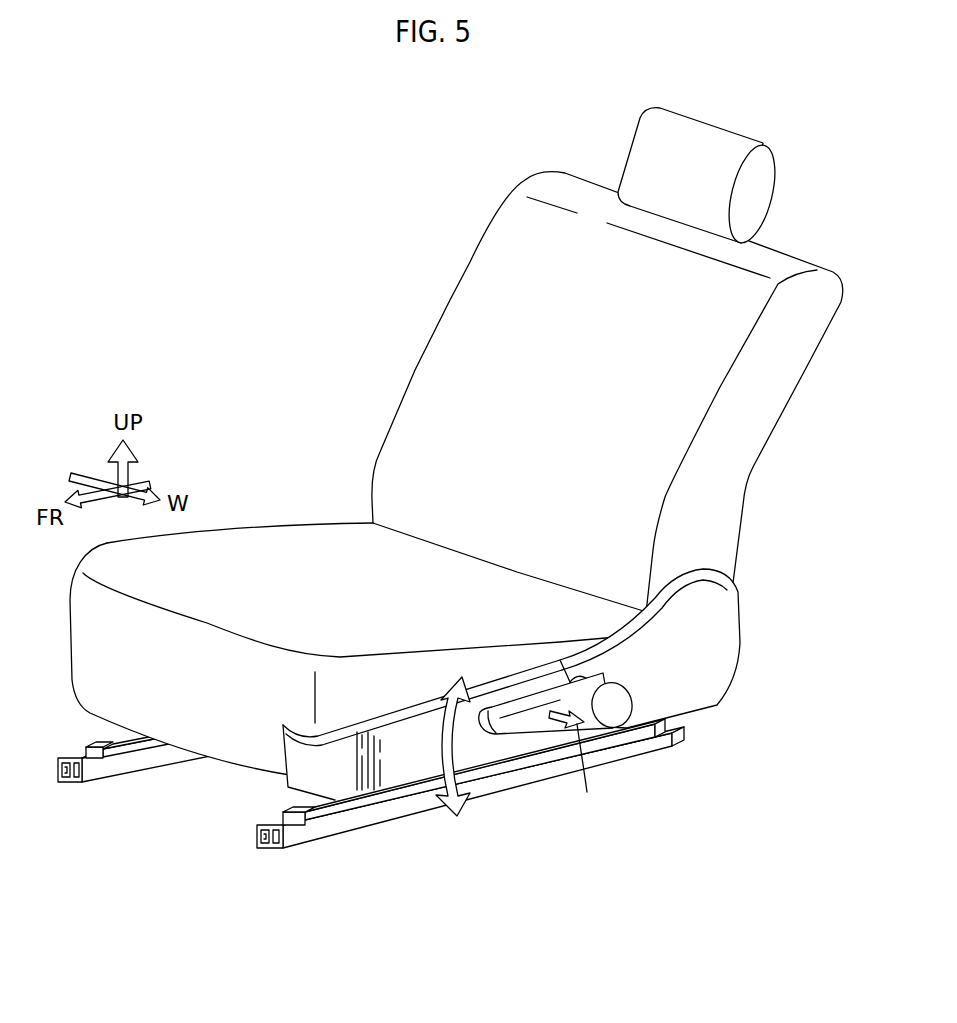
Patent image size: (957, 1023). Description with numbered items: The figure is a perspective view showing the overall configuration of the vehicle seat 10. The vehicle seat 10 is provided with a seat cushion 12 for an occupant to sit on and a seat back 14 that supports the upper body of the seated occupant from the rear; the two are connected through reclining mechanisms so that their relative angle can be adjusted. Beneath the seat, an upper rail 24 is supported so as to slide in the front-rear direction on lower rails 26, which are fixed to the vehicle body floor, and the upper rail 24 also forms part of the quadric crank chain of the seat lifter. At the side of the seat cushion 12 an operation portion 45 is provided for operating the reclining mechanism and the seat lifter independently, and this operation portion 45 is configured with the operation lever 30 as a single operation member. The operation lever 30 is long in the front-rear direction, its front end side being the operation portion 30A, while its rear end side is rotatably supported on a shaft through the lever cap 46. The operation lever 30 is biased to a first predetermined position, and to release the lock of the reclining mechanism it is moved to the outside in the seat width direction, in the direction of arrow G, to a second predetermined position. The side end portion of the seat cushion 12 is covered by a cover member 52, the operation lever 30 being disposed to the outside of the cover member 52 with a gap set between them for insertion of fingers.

The vehicle seat 10 is at (450, 493).
The seat cushion 12 is at (268, 537).
The seat back 14 is at (436, 368).
The upper rail 24 is at (137, 752).
The lower rails 26 is at (107, 770).
The operation lever 30 is at (562, 707).
The operation portion 30A is at (515, 710).
The operation portion 45 is at (648, 678).
The lever cap 46 is at (613, 712).
The cover member 52 is at (492, 745).